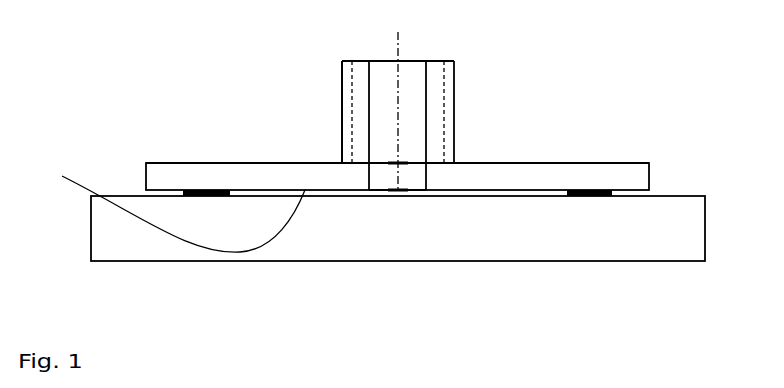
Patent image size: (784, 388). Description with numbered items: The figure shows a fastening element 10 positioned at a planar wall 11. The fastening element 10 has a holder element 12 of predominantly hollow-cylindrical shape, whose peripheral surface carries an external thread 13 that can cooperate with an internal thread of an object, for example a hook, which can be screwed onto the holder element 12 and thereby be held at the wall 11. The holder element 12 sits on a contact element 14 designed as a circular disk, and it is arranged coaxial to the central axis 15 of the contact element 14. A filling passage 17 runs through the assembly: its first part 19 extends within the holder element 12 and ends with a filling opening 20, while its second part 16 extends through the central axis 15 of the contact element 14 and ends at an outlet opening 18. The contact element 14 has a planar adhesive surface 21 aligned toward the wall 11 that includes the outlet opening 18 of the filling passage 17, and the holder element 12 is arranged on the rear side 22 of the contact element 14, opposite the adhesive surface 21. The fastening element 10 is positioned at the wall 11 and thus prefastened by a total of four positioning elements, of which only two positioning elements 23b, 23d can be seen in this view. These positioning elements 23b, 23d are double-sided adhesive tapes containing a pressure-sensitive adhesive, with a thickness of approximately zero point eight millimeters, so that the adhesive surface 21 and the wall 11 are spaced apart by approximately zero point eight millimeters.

The fastening element 10 is at (582, 88).
The wall 11 is at (695, 223).
The holder element 12 is at (435, 67).
The external thread 13 is at (343, 61).
The contact element 14 is at (650, 165).
The central axis 15 is at (397, 40).
The second part of the filling passage 16 is at (380, 178).
The filling passage 17 is at (370, 136).
The outlet opening 18 is at (415, 190).
The first part of the filling passage 19 is at (380, 95).
The filling opening 20 is at (387, 60).
The adhesive surface 21 is at (171, 206).
The rear side 22 is at (595, 163).
The positioning element 23b is at (593, 197).
The positioning element 23d is at (194, 196).